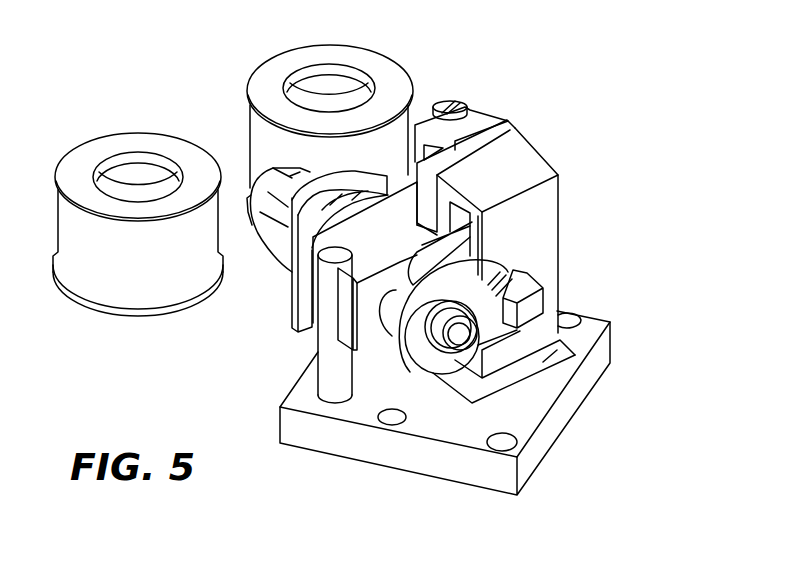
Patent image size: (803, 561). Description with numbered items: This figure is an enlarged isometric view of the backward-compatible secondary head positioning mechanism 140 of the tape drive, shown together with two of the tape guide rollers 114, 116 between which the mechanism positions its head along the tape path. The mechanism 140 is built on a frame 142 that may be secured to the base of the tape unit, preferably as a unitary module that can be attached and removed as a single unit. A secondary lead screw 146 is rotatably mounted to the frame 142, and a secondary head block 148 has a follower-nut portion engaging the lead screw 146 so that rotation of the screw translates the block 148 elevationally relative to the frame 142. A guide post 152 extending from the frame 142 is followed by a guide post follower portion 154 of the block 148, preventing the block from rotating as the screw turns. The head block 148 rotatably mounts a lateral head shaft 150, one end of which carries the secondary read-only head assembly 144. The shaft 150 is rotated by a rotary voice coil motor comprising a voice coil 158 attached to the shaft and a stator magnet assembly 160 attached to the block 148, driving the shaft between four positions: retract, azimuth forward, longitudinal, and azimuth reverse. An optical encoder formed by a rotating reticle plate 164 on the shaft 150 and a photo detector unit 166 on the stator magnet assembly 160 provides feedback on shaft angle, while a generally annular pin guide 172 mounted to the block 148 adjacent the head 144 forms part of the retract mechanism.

The tape guide roller 114 is at (330, 45).
The tape guide roller 116 is at (137, 133).
The secondary head positioning mechanism 140 is at (566, 54).
The frame 142 is at (580, 405).
The secondary read-only head assembly 144 is at (270, 188).
The secondary lead screw 146 is at (453, 101).
The secondary head block 148 is at (365, 345).
The lateral head shaft 150 is at (457, 340).
The guide post 152 is at (327, 402).
The guide post follower portion 154 is at (335, 268).
The voice coil 158 is at (487, 211).
The stator magnet assembly 160 is at (560, 222).
The rotating reticle plate 164 is at (523, 258).
The photo detector unit 166 is at (542, 313).
The pin guide 172 is at (292, 292).